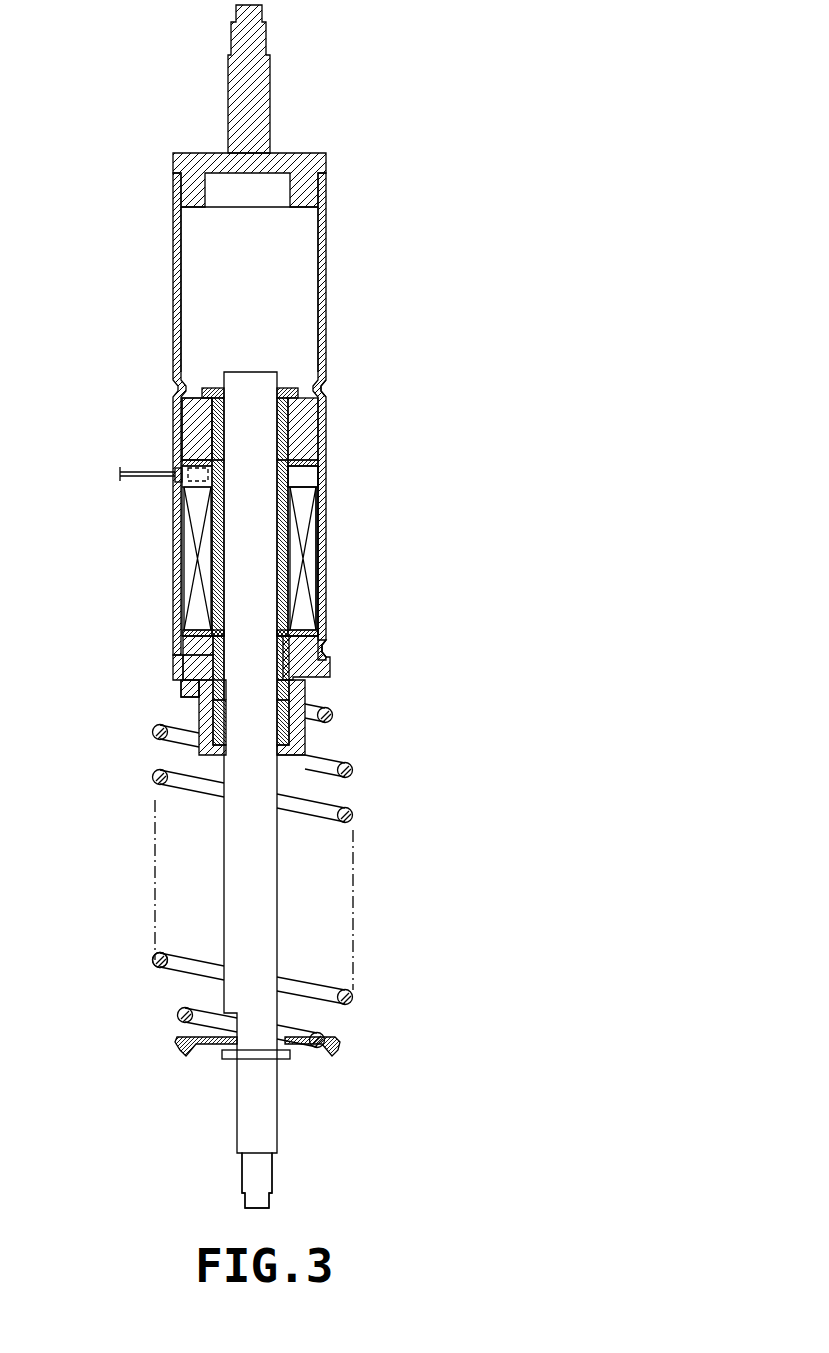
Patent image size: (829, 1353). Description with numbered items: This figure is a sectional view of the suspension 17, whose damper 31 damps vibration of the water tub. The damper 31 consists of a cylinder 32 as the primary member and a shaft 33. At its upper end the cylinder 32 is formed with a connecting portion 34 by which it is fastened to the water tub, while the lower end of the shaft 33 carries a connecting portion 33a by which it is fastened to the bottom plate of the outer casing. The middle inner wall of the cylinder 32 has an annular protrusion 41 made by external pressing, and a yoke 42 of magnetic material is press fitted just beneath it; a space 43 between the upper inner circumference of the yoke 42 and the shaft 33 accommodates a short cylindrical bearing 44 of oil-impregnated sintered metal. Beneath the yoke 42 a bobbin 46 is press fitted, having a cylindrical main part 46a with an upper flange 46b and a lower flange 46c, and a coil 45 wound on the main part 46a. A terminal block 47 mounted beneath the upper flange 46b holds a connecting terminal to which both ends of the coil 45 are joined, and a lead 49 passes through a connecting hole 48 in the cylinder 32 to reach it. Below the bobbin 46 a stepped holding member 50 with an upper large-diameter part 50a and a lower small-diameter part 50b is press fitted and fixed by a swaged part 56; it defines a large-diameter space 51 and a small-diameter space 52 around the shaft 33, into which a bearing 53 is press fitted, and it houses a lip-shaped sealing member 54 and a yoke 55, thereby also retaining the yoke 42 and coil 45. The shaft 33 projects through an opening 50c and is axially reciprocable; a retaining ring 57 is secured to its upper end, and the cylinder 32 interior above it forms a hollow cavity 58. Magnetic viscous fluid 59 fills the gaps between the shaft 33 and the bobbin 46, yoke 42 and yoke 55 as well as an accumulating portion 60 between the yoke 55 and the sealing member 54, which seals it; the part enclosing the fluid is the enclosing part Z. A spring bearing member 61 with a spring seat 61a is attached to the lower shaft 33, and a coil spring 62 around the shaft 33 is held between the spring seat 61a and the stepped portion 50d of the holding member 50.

The connecting portion 34 is at (272, 100).
The cylinder 32 is at (324, 253).
The hollow cavity 58 is at (200, 256).
The damper 31 is at (338, 312).
The annular protrusion 41 is at (323, 383).
The retaining ring 57 is at (208, 388).
The space 43 is at (182, 410).
The enclosing part Z is at (188, 452).
The bearing 44 is at (320, 410).
The yoke 42 is at (320, 447).
The connecting hole 48 is at (182, 463).
The lead 49 is at (122, 476).
The terminal block 47 is at (183, 500).
The bobbin 46 is at (326, 520).
The upper flange 46b is at (320, 470).
The coil 45 is at (320, 560).
The cylindrical main part 46a is at (320, 590).
The lower flange 46c is at (318, 633).
The magnetic viscous fluid 59 is at (232, 565).
The large-diameter space 51 is at (185, 625).
The upper large-diameter part 50a is at (183, 652).
The holding member 50 is at (178, 670).
The stepped portion 50d is at (190, 690).
The lower small-diameter part 50b is at (205, 750).
The small-diameter space 52 is at (213, 745).
The yoke 55 is at (322, 638).
The swaged part 56 is at (330, 648).
The accumulating portion 60 is at (312, 680).
The sealing member 54 is at (305, 700).
The bearing 53 is at (303, 735).
The suspension 17 is at (408, 750).
The opening 50c is at (275, 745).
The shaft 33 is at (282, 905).
The coil spring 62 is at (152, 962).
The spring seat 61a is at (340, 1052).
The spring bearing member 61 is at (290, 1058).
The connecting portion 33a is at (272, 1172).